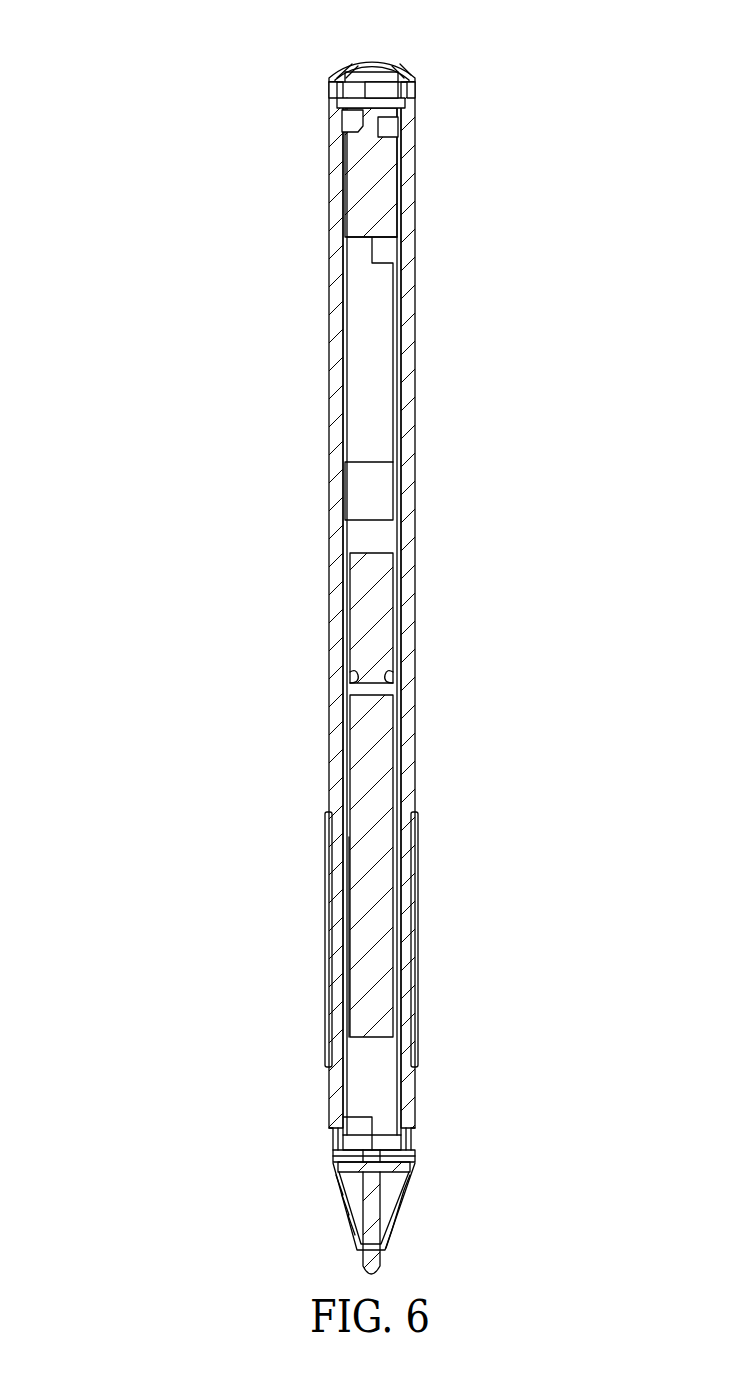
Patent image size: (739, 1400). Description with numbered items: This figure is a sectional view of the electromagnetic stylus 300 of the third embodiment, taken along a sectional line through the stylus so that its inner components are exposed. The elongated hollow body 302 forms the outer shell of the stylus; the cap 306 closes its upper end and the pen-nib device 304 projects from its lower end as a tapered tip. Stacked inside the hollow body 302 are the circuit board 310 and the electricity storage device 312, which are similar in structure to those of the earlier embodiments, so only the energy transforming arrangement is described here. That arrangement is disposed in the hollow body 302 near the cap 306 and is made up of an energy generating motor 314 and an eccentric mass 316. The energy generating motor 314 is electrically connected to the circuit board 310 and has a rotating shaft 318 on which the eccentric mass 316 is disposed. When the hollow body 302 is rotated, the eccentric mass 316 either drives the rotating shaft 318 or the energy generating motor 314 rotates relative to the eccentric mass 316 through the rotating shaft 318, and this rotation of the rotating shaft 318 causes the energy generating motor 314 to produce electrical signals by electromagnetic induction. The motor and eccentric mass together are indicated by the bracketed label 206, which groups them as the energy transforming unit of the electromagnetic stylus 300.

The electromagnetic stylus 300 is at (332, 641).
The hollow body 302 is at (335, 444).
The pen-nib device 304 is at (398, 1172).
The cap 306 is at (394, 70).
The circuit board 310 is at (376, 790).
The electricity storage device 312 is at (386, 620).
The energy generating motor 314 is at (388, 205).
The eccentric mass 316 is at (388, 110).
The rotating shaft 318 is at (372, 128).
The button assembly 206 is at (480, 98).